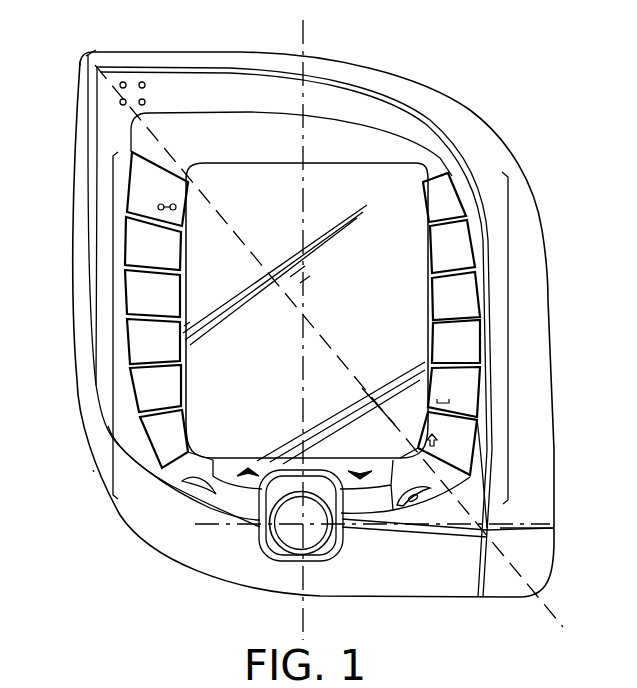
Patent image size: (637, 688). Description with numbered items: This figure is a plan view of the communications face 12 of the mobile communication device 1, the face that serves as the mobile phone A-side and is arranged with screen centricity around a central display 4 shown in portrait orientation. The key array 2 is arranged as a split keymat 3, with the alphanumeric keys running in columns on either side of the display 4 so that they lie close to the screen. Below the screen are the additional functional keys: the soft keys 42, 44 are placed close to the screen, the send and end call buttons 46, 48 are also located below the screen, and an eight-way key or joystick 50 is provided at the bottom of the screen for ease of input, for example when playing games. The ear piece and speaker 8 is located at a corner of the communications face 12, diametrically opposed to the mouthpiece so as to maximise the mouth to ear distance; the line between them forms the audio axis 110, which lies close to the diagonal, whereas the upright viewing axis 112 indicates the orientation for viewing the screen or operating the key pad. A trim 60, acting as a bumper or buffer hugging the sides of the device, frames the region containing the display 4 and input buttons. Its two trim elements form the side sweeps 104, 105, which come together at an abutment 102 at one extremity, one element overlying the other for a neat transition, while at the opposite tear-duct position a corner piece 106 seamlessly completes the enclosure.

The communication device 1 is at (418, 55).
The key array 2 is at (137, 297).
The split keymat 3 is at (112, 324).
The display 4 is at (408, 294).
The ear piece and speaker 8 is at (144, 80).
The communications face 12 is at (386, 193).
The soft key 42 is at (242, 480).
The soft key 44 is at (362, 480).
The send call button 46 is at (182, 480).
The end call button 48 is at (433, 505).
The 8-way key or joystick 50 is at (291, 542).
The trim 60 is at (541, 460).
The abutment 102 is at (90, 50).
The side sweep 104 is at (93, 470).
The side sweep 105 is at (546, 250).
The corner piece 106 is at (534, 551).
The audio axis 110 is at (81, 53).
The upright viewing axis 112 is at (301, 24).